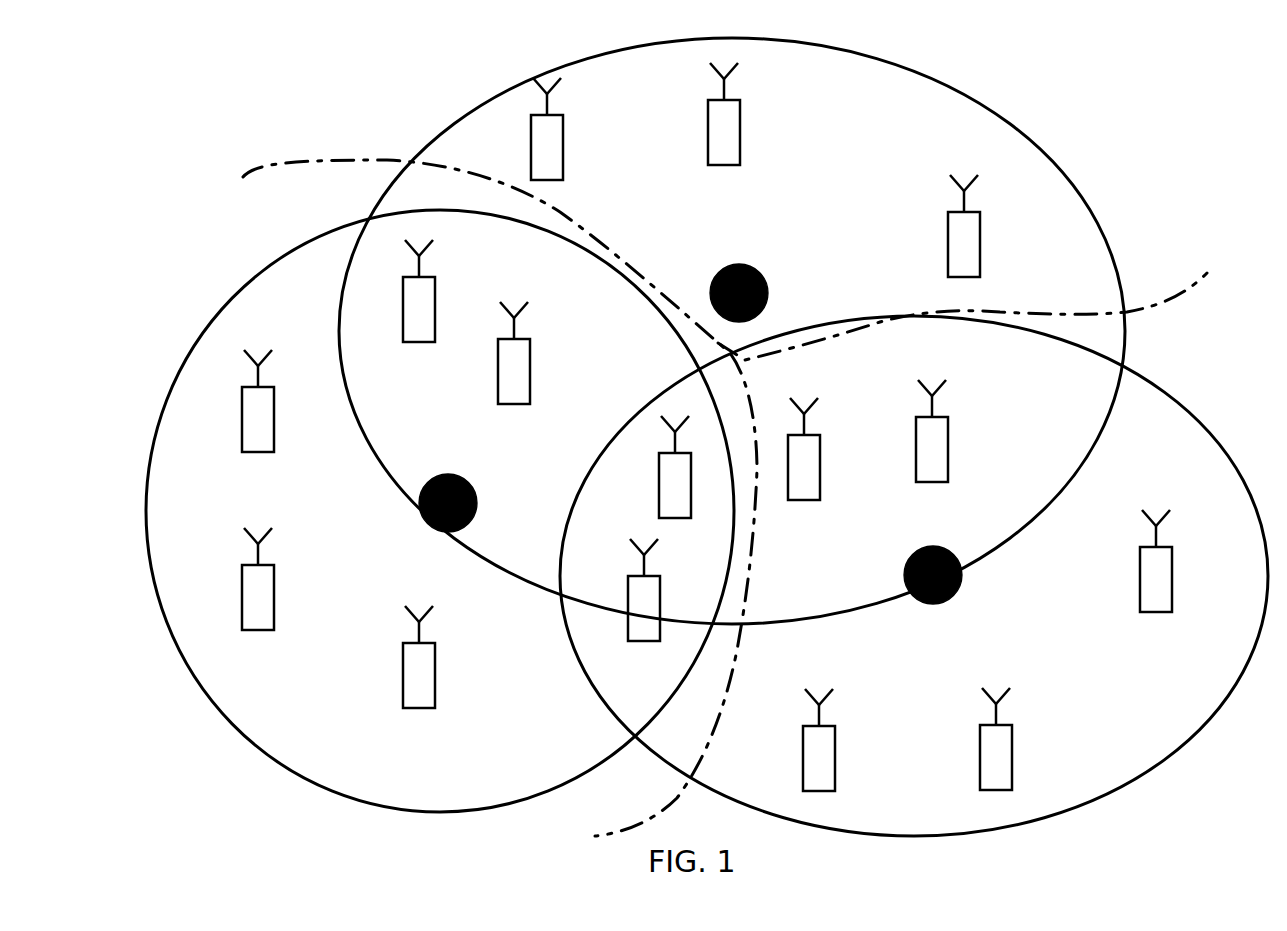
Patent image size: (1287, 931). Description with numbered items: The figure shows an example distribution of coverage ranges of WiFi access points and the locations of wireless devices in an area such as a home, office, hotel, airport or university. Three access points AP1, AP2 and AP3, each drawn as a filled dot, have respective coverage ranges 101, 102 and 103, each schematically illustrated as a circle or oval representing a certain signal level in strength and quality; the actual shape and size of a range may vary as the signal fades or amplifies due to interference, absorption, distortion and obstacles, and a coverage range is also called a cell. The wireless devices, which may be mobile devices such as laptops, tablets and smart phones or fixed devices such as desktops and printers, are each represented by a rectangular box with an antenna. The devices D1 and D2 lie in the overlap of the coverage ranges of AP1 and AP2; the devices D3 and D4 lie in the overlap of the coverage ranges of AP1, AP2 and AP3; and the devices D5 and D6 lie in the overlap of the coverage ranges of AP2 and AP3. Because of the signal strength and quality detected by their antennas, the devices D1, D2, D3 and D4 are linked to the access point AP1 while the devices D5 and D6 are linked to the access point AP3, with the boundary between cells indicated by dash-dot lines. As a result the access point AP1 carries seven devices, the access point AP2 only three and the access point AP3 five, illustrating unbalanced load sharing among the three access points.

The coverage range 101 is at (257, 275).
The coverage range 102 is at (1108, 233).
The coverage range 103 is at (1182, 400).
The access point AP1 is at (447, 487).
The access point AP2 is at (739, 278).
The access point AP3 is at (933, 600).
The wireless device D1 is at (441, 291).
The wireless device D2 is at (537, 353).
The wireless device D3 is at (652, 467).
The wireless device D4 is at (620, 590).
The wireless device D5 is at (826, 449).
The wireless device D6 is at (955, 431).